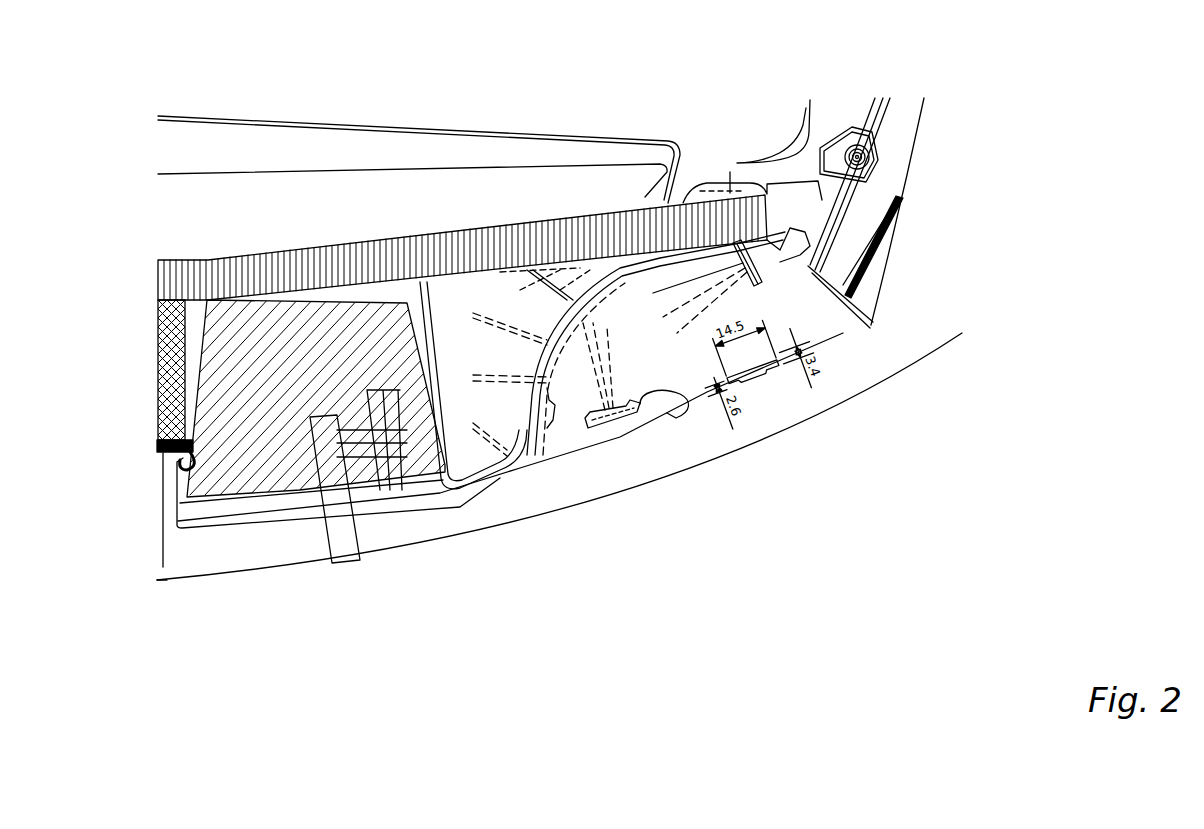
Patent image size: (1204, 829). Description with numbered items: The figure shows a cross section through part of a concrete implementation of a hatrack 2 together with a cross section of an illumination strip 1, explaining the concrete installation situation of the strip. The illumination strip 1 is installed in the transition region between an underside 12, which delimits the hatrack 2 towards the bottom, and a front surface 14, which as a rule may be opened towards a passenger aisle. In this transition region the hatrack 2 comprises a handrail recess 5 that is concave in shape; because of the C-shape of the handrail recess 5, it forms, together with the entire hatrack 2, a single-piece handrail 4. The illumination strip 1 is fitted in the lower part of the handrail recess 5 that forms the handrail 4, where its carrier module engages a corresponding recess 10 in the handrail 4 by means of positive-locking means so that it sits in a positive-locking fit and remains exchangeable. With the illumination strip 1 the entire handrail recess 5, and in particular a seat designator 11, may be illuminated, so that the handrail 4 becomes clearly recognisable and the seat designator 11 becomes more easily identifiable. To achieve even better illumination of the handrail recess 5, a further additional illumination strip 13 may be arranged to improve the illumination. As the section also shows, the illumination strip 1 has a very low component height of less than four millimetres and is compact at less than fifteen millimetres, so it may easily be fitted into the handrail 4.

The illumination strip 1 is at (630, 390).
The hatrack 2 is at (521, 192).
The handrail 4 is at (669, 416).
The handrail recess 5 is at (577, 395).
The recess 10 is at (621, 422).
The seat designator 11 is at (611, 410).
The underside 12 is at (323, 576).
The additional illumination strip 13 is at (757, 283).
The front surface 14 is at (921, 117).